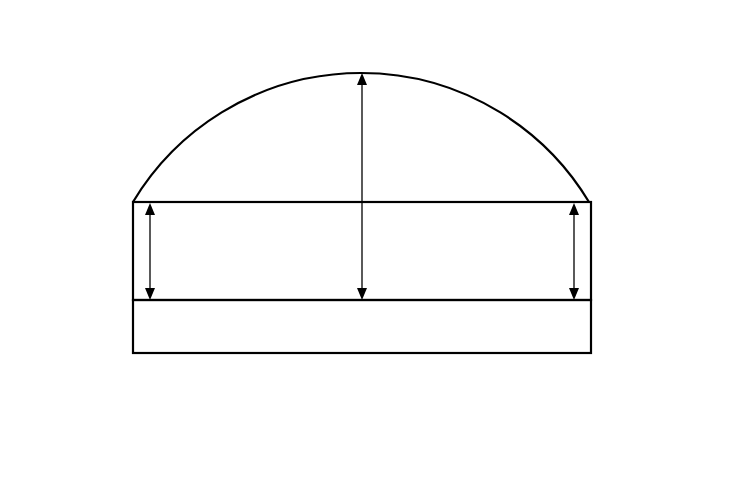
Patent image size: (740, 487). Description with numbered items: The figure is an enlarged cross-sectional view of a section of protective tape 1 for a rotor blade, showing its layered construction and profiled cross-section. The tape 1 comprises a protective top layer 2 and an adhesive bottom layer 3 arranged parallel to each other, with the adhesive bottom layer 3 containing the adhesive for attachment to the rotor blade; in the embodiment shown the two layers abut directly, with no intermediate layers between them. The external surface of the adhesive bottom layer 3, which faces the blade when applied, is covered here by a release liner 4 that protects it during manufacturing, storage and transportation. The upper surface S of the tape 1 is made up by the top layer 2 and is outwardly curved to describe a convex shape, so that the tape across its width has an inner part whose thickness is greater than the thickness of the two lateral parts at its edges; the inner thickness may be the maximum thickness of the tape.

The tape 1 is at (518, 62).
The protective top layer 2 is at (148, 182).
The adhesive bottom layer 3 is at (133, 252).
The release liner 4 is at (133, 322).
The surface S is at (389, 72).